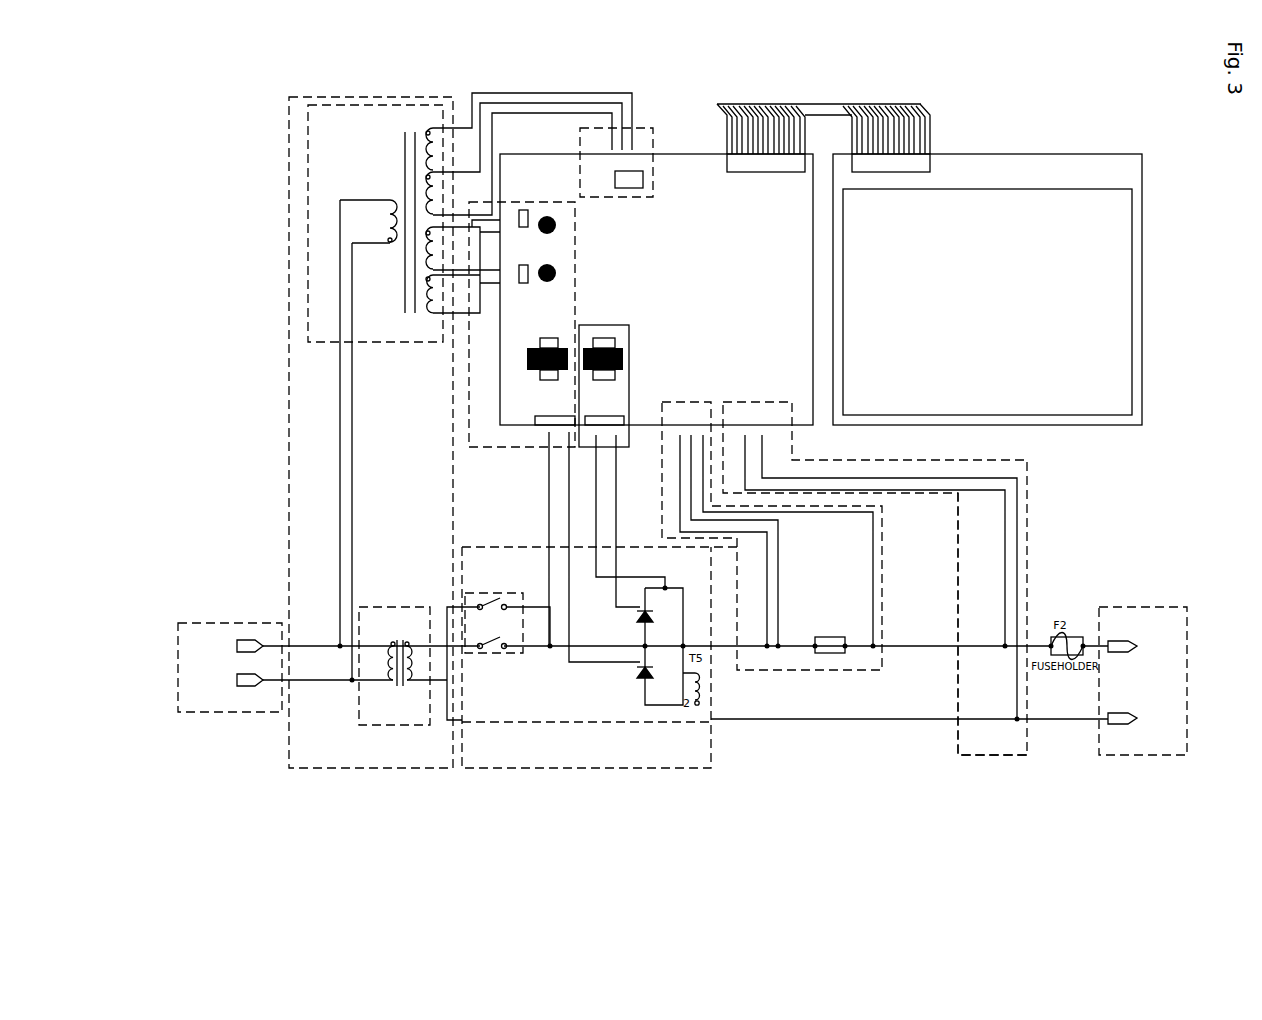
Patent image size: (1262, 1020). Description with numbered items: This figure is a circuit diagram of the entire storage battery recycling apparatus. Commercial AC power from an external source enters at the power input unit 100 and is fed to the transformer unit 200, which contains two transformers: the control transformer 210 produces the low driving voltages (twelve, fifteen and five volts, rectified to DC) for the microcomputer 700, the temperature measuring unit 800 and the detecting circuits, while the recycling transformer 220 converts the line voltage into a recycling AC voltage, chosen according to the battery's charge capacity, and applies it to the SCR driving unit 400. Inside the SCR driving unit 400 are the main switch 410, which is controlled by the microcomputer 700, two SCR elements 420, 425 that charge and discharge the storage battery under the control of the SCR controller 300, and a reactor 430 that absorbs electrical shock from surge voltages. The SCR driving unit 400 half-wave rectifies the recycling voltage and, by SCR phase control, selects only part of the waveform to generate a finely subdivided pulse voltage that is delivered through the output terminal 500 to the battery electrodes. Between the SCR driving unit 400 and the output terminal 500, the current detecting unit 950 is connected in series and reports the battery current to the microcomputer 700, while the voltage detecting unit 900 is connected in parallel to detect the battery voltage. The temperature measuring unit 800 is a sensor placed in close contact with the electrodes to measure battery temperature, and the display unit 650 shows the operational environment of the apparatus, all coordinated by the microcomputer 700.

The power input unit 100 is at (247, 620).
The transformer unit 200 is at (348, 92).
The control transformer 210 is at (308, 157).
The recycling transformer 220 is at (406, 726).
The SCR controller 300 is at (640, 387).
The SCR driving unit 400 is at (602, 772).
The main switch 410 is at (501, 653).
The SCR element 420 is at (632, 625).
The SCR element 425 is at (628, 688).
The reactor 430 is at (705, 688).
The output terminal 500 is at (1147, 757).
The display unit 650 is at (1073, 143).
The microcomputer 700 is at (584, 287).
The temperature measuring unit 800 is at (660, 130).
The voltage detecting unit 900 is at (1003, 760).
The current detecting unit 950 is at (810, 673).